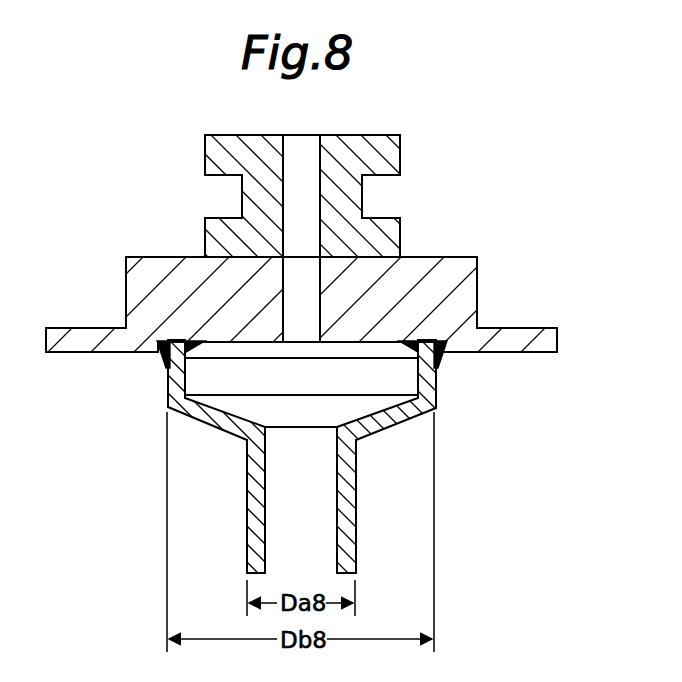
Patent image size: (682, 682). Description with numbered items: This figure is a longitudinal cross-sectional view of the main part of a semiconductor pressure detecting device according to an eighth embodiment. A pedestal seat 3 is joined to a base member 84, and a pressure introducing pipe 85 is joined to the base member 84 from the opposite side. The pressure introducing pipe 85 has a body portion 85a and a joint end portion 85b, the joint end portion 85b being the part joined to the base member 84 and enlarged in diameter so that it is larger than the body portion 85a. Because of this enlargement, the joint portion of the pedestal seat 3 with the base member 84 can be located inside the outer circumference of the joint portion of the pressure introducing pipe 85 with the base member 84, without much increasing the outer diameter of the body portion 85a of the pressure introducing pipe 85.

The pedestal seat 3 is at (404, 149).
The base member 84 is at (469, 256).
The pressure introducing pipe 85 is at (336, 456).
The body portion 85a is at (247, 494).
The joint end portion 85b is at (168, 402).